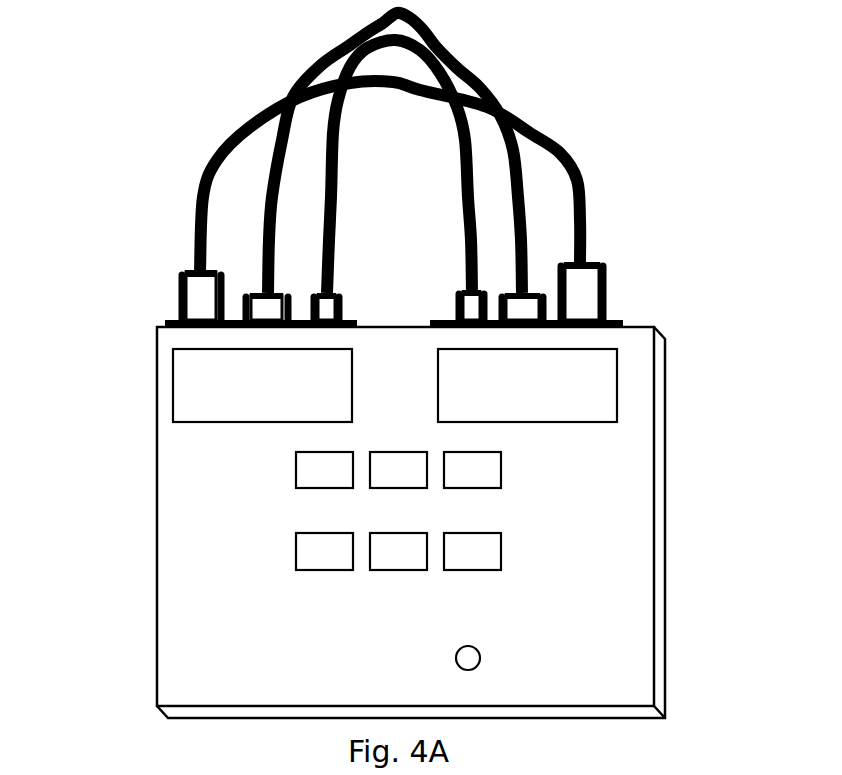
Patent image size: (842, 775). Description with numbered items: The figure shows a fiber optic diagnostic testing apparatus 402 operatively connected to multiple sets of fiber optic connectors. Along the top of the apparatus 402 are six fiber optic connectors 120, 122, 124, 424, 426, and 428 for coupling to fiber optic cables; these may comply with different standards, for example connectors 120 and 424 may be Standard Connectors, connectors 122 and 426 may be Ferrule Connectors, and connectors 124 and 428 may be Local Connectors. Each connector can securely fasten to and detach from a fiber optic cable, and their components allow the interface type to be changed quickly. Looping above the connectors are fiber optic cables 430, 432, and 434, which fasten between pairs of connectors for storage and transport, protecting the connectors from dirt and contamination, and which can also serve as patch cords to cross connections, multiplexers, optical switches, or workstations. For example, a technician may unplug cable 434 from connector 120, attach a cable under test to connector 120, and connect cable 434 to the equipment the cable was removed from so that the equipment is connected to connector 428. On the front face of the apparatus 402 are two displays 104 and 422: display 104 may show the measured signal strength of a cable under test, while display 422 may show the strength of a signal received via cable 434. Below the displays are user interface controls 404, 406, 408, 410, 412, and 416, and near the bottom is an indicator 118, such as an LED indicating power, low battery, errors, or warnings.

The display 104 is at (172, 388).
The indicator 118 is at (480, 655).
The fiber optic connector 120 is at (177, 305).
The fiber optic connector 122 is at (257, 290).
The fiber optic connector 124 is at (335, 293).
The fiber optic diagnostic testing apparatus 402 is at (158, 573).
The user interface control 404 is at (324, 470).
The user interface control 406 is at (398, 470).
The user interface control 408 is at (472, 470).
The user interface control 410 is at (324, 551).
The user interface control 412 is at (398, 551).
The user interface control 416 is at (472, 551).
The display 422 is at (618, 385).
The fiber optic connector 424 is at (457, 287).
The fiber optic connector 426 is at (539, 287).
The fiber optic connector 428 is at (605, 262).
The fiber optic cable 430 is at (420, 17).
The fiber optic cable 432 is at (480, 78).
The fiber optic cable 434 is at (560, 152).